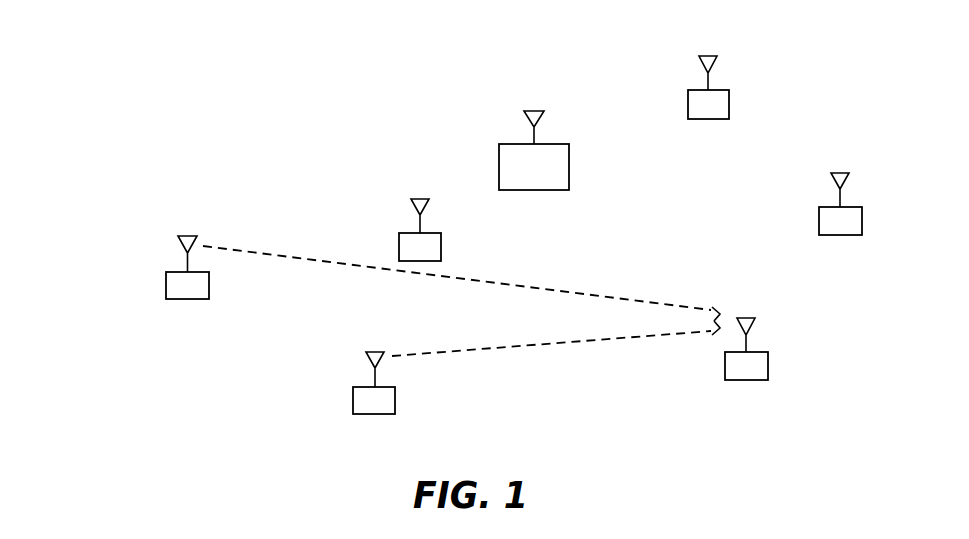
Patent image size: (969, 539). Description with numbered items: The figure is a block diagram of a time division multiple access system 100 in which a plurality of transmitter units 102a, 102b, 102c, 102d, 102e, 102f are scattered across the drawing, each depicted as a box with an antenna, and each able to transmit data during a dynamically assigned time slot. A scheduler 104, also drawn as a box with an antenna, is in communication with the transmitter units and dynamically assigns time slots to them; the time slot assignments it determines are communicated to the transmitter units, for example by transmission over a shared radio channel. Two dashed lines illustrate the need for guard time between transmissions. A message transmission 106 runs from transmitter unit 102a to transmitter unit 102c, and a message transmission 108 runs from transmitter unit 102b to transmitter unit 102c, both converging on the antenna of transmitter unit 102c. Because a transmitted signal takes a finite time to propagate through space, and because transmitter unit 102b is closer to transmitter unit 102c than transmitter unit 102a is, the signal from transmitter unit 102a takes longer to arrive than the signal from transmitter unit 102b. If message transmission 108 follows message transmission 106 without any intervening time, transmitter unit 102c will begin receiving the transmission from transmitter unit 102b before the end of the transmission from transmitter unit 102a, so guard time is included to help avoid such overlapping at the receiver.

The time division multiple access system 100 is at (191, 61).
The transmitter unit 102a is at (166, 280).
The transmitter unit 102b is at (353, 395).
The transmitter unit 102c is at (725, 365).
The transmitter unit 102d is at (399, 239).
The transmitter unit 102e is at (688, 95).
The transmitter unit 102f is at (819, 213).
The scheduler 104 is at (499, 150).
The message transmission 106 is at (512, 290).
The message transmission 108 is at (462, 352).